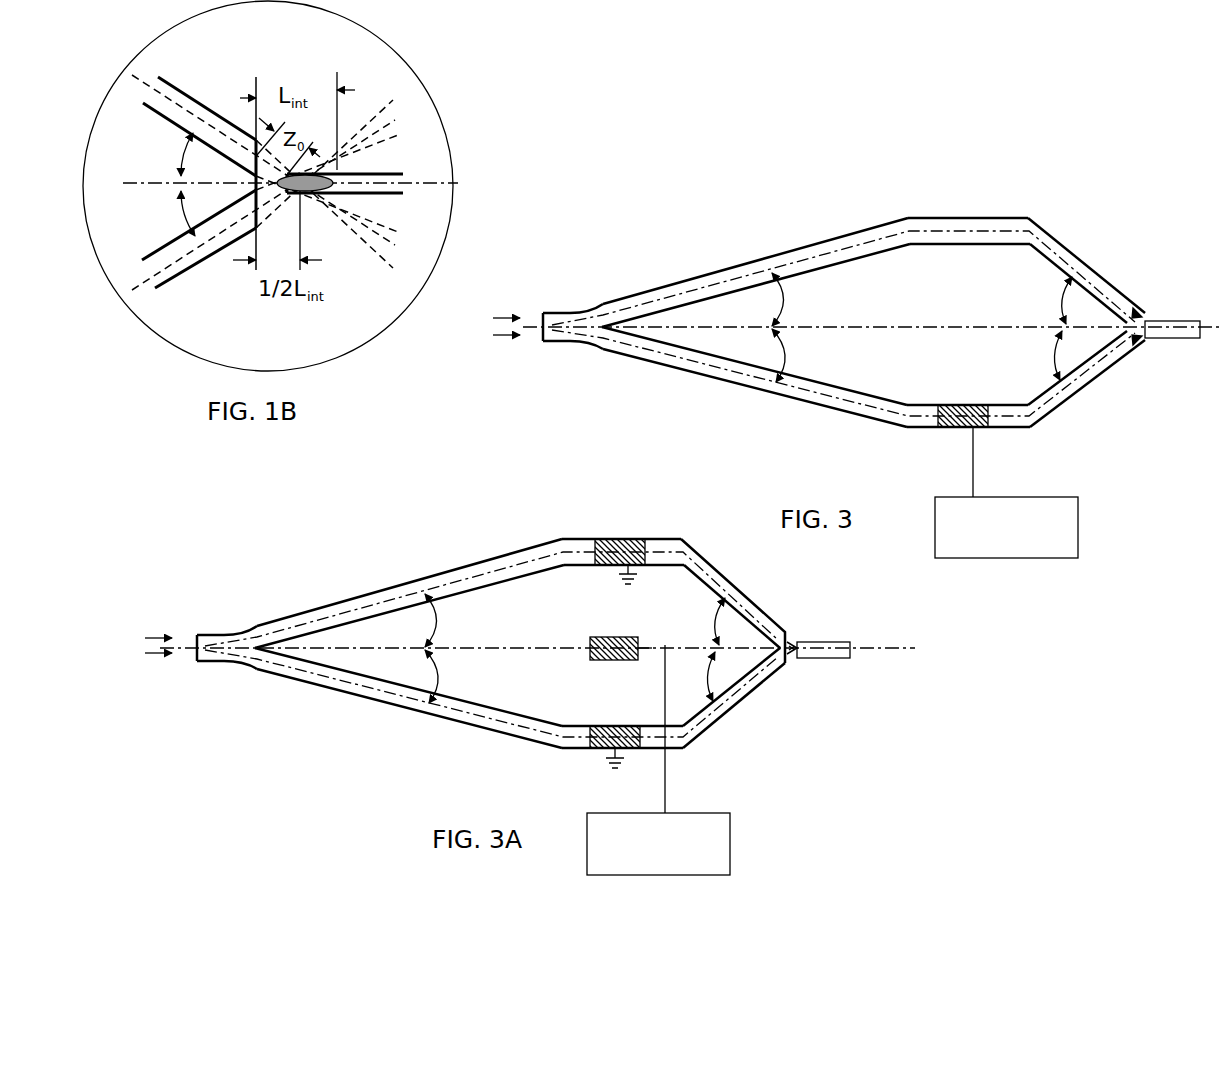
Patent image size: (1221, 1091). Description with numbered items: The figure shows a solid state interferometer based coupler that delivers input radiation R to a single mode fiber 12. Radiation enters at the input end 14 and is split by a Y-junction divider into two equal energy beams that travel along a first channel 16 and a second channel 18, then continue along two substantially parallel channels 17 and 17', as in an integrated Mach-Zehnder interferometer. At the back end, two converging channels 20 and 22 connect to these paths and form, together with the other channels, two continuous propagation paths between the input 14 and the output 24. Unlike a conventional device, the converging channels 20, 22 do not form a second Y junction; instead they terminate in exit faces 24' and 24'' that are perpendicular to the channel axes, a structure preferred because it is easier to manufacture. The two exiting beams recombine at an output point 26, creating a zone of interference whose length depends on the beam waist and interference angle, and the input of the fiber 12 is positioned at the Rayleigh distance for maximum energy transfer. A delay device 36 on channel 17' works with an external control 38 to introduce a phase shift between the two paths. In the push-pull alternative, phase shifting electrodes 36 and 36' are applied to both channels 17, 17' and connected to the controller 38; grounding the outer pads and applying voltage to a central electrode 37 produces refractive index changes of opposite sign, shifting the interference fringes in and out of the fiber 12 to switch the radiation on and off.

In FIG. 3, the single mode fiber 12 is at (1162, 340).
In FIG. 3A, the single mode fiber 12 is at (815, 660).
In FIG. 3, the input end 14 is at (543, 330).
In FIG. 3A, the input end 14 is at (197, 655).
In FIG. 3, the first channel 16 is at (785, 256).
In FIG. 3A, the first channel 16 is at (438, 575).
In FIG. 3, the parallel channel 17 is at (969, 203).
In FIG. 3A, the parallel channel 17 is at (613, 510).
In FIG. 3, the parallel channel 17' is at (968, 393).
In FIG. 3A, the parallel channel 17' is at (589, 761).
In FIG. 3, the second channel 18 is at (790, 388).
In FIG. 3A, the second channel 18 is at (435, 718).
In FIG. 3, the converging channel 20 is at (1090, 268).
In FIG. 3A, the converging channel 20 is at (745, 590).
In FIG. 3, the converging channel 22 is at (1088, 385).
In FIG. 3A, the converging channel 22 is at (740, 708).
In FIG. 3A, the output 24 is at (815, 609).
In FIG. 3, the exit face 24' is at (1150, 281).
In FIG. 3, the exit face 24'' is at (1142, 365).
In FIG. 3, the output point 26 is at (1150, 320).
In FIG. 3A, the output point 26 is at (800, 642).
In FIG. 3, the delay device 36 is at (949, 393).
In FIG. 3A, the delay device 36 is at (602, 724).
In FIG. 3A, the phase shifting electrode 36' is at (604, 574).
In FIG. 3A, the central electrode 37 is at (588, 645).
In FIG. 3, the external control 38 is at (1006, 492).
In FIG. 3A, the external control 38 is at (658, 760).